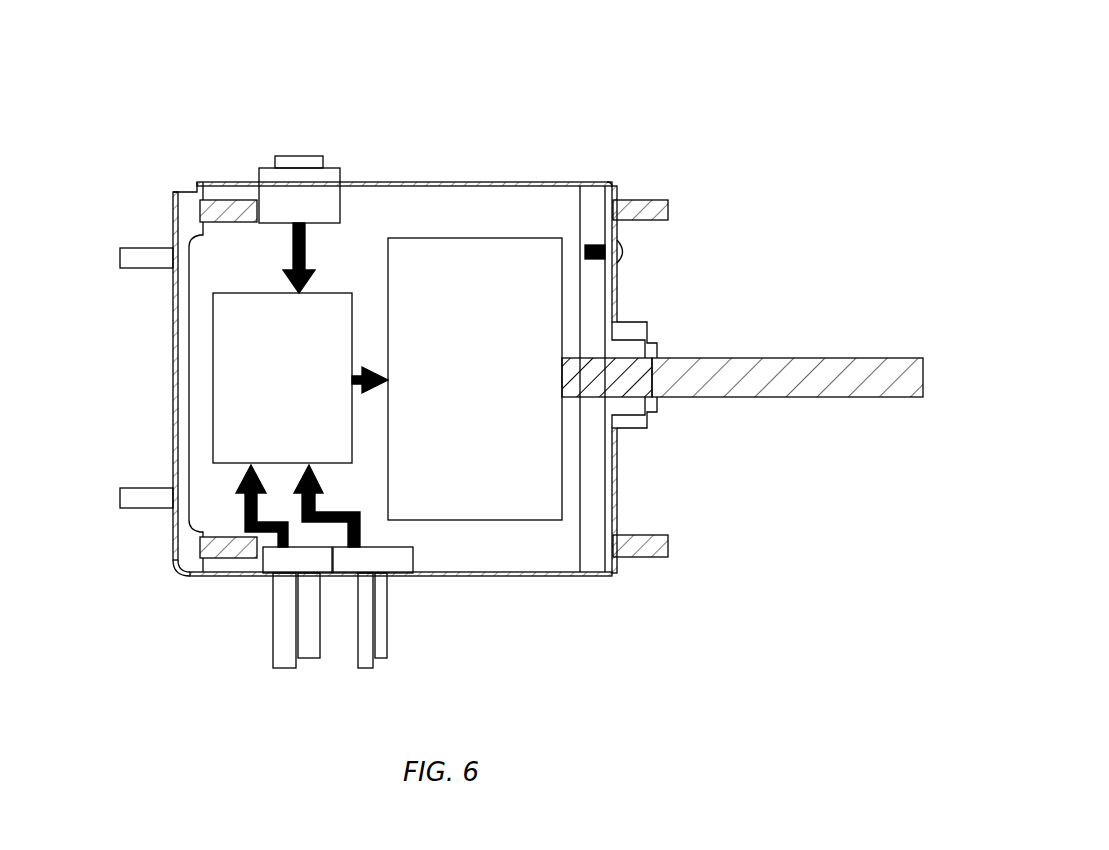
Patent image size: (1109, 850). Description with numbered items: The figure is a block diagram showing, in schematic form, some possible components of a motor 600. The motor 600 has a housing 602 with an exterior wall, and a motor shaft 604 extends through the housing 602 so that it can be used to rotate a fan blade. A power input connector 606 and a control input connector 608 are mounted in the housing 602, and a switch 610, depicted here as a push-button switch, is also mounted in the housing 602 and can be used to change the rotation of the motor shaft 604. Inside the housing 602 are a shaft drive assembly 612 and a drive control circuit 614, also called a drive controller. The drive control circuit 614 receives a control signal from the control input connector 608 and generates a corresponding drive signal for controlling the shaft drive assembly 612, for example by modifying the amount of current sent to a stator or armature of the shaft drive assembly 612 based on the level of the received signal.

The motor 600 is at (503, 363).
The housing 602 is at (470, 180).
The motor shaft 604 is at (862, 397).
The power input connector 606 is at (262, 622).
The control input connector 608 is at (392, 668).
The switch 610 is at (340, 168).
The shaft drive assembly 612 is at (525, 238).
The drive control circuit 614 is at (213, 372).